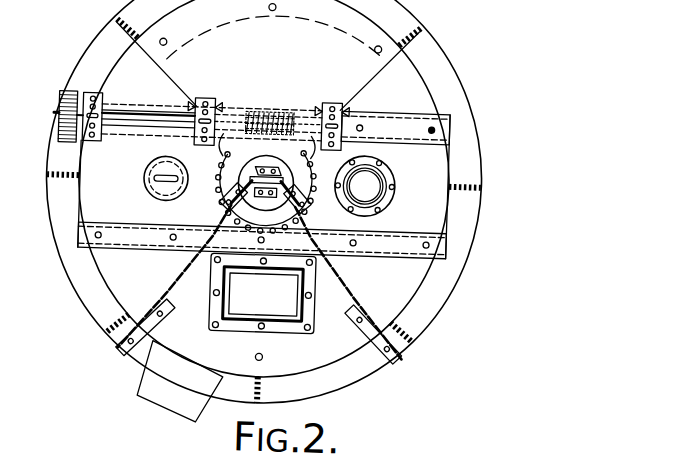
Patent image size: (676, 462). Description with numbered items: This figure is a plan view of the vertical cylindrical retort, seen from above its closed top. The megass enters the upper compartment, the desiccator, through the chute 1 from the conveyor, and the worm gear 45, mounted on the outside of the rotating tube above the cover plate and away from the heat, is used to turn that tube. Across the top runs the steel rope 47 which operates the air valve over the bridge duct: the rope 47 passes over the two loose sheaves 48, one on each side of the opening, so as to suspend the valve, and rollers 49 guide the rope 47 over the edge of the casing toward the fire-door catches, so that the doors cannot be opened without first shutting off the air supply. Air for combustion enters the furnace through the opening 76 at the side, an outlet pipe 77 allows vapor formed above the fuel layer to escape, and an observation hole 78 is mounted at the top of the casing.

The chute 1 is at (287, 297).
The worm gear 45 is at (263, 112).
The steel rope 47 is at (340, 271).
The loose sheaves 48 is at (287, 179).
The rollers 49 is at (120, 352).
The air inlet opening 76 is at (187, 395).
The outlet pipe 77 is at (372, 177).
The observation hole 78 is at (143, 174).